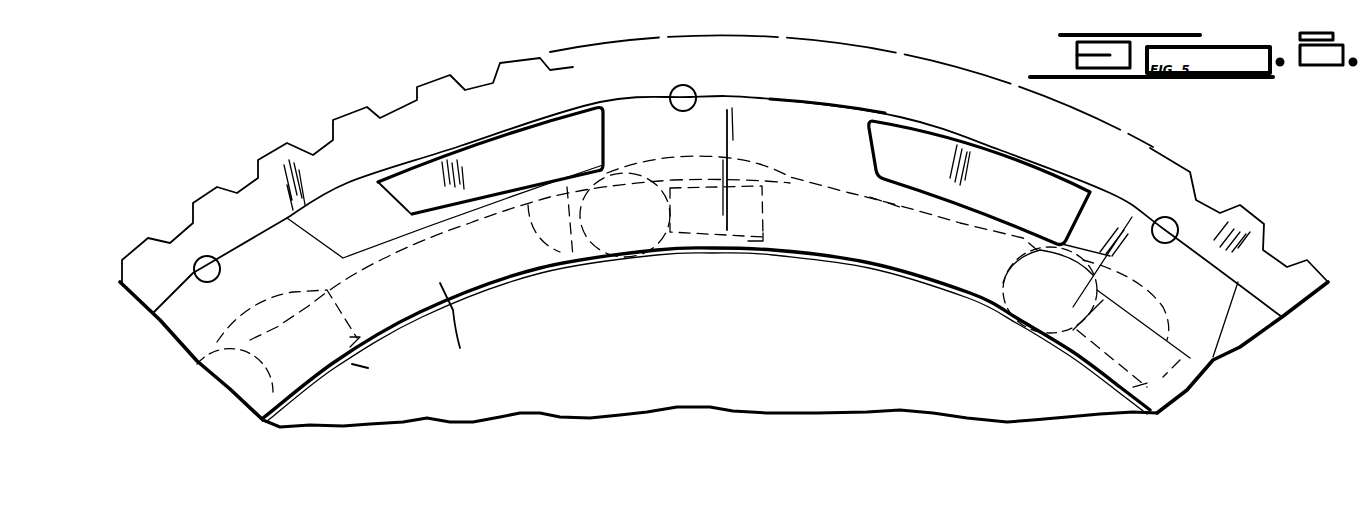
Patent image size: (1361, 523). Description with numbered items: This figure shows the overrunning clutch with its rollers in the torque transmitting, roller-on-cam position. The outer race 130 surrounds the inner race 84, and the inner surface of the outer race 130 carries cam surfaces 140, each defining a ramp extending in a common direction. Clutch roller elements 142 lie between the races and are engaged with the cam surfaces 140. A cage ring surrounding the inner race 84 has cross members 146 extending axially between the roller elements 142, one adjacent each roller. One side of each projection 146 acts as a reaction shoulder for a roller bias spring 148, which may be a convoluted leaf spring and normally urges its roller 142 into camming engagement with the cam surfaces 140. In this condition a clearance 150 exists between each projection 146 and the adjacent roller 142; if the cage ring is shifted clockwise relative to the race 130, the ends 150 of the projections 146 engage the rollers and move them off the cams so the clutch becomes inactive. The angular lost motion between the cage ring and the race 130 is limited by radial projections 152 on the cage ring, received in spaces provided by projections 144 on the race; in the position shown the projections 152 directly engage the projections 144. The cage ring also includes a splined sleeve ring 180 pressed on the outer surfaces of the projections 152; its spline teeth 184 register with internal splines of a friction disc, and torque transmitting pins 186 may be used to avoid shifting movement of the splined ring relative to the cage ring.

The inner race 84 is at (830, 258).
The outer race 130 is at (760, 127).
The cam surfaces 140 is at (600, 270).
The clutch roller elements 142 is at (245, 388).
The projections 144 is at (480, 153).
The cross members 146 is at (476, 327).
The roller bias springs 148 is at (386, 376).
The clearance 150 is at (556, 262).
The radial projections 152 is at (630, 122).
The splined sleeve ring 180 is at (240, 225).
The spline teeth 184 is at (1230, 206).
The torque transmitting pins 186 is at (194, 268).